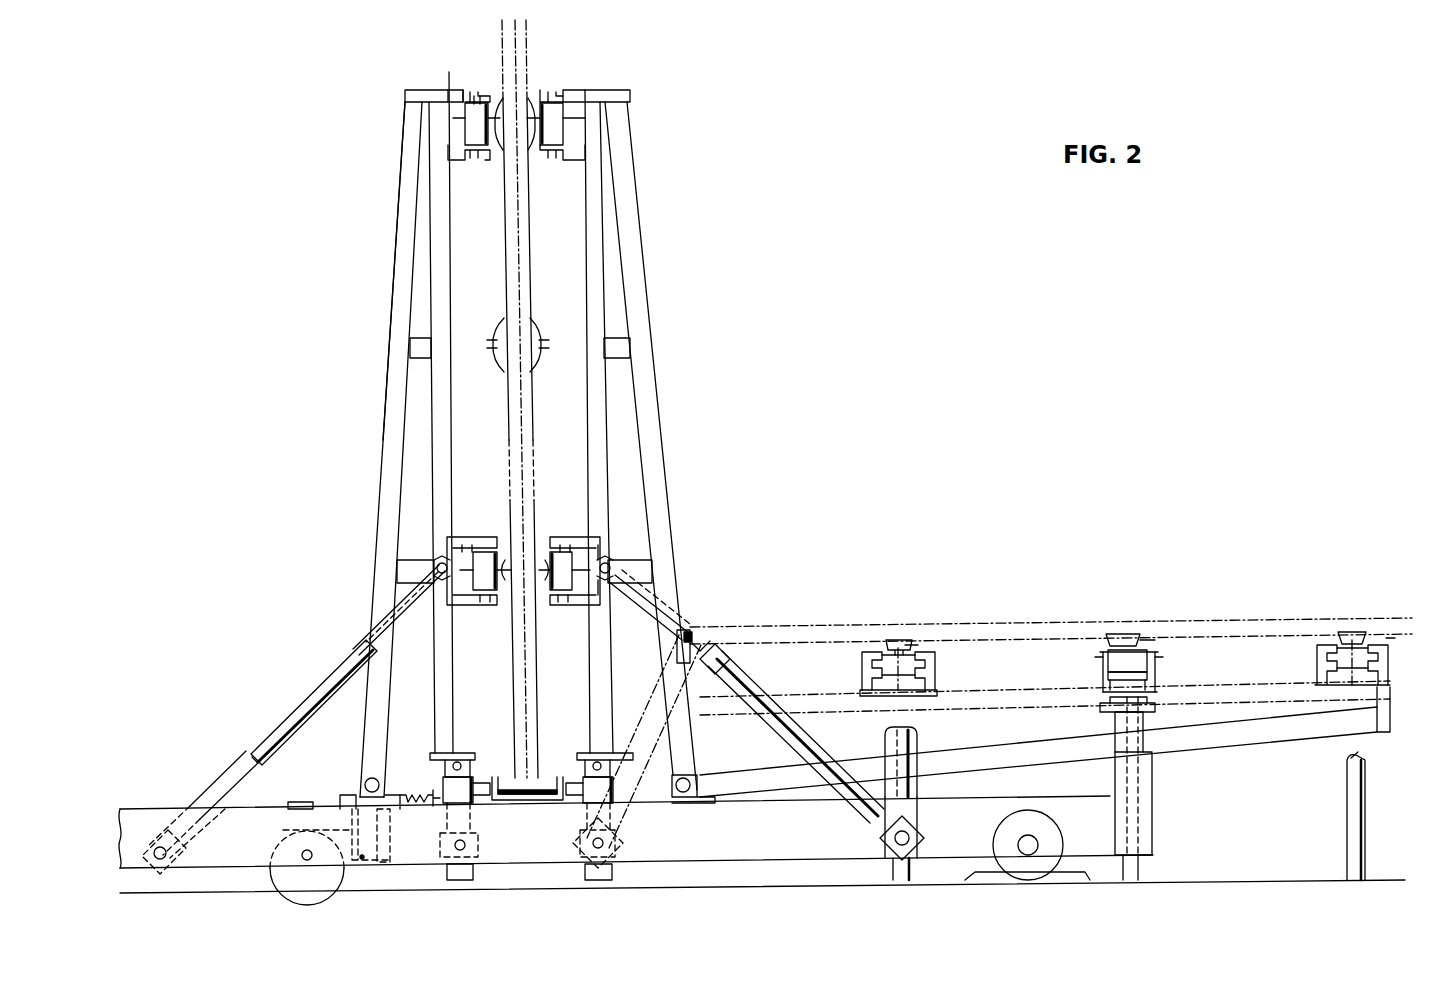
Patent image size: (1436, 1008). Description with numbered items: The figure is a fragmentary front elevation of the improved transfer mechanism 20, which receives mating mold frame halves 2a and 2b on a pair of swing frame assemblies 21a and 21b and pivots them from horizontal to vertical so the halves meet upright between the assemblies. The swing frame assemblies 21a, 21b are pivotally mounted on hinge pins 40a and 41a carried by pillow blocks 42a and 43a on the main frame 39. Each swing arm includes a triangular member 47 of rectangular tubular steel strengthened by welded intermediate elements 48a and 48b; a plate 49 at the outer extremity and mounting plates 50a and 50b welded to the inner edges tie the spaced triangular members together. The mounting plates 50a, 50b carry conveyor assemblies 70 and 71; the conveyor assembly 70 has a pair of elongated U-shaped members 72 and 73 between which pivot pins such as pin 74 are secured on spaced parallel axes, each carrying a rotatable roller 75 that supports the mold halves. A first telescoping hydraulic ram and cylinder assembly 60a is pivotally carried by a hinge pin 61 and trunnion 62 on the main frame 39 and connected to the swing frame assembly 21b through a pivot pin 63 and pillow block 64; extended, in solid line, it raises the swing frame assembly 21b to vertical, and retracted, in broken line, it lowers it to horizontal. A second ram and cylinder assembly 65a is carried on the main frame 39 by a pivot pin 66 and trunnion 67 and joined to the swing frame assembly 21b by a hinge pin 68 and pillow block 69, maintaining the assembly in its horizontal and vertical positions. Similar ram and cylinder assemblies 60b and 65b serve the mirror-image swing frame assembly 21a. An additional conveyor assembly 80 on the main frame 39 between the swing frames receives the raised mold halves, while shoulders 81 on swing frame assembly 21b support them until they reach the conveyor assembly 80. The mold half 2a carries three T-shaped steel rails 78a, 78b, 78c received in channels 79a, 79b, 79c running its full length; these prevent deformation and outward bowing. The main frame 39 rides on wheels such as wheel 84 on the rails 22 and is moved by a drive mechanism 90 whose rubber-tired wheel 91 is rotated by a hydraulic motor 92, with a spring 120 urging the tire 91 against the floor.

The mold frame half 2a is at (531, 404).
The mold frame half 2b is at (508, 416).
The transfer mechanism 20 is at (770, 457).
The swing frame assembly 21a is at (376, 526).
The swing frame assembly 21b is at (662, 426).
The rails 22 is at (975, 874).
The main frame 39 is at (1096, 832).
The hinge pin 40a is at (366, 781).
The hinge pin 41a is at (685, 796).
The pillow block 42a is at (346, 796).
The pillow block 43a is at (708, 804).
The triangular member 47 is at (387, 400).
The intermediate element 48a is at (414, 560).
The intermediate element 48b is at (415, 346).
The plate 49 is at (410, 92).
The mounting plate 50a is at (513, 401).
The mounting plate 50b is at (452, 540).
The telescoping hydraulic ram and cylinder assembly 60a is at (812, 762).
The ram and cylinder assembly 60b is at (290, 708).
The hinge pin 61 is at (912, 836).
The trunnion 62 is at (884, 845).
The pivot pin 63 is at (612, 566).
The pillow block 64 is at (604, 548).
The ram and cylinder assembly 65a is at (584, 815).
The ram and cylinder assembly 65b is at (446, 812).
The pivot pin 66 is at (580, 845).
The trunnion 67 is at (614, 845).
The hinge pin 68 is at (602, 756).
The pillow block 69 is at (580, 755).
The conveyor assembly 70 is at (475, 128).
The conveyor assembly 71 is at (523, 579).
The U-shaped member 72 is at (488, 94).
The U-shaped member 73 is at (486, 157).
The pivot pin 74 is at (477, 98).
The roller 75 is at (470, 130).
The T-shaped member 78a is at (890, 636).
The T-shaped member 78b is at (1112, 632).
The T-shaped member 78c is at (1338, 630).
The channel 79a is at (922, 647).
The channel 79b is at (1150, 642).
The channel 79c is at (1388, 641).
The conveyor assembly 80 is at (509, 807).
The shoulder 81 is at (688, 632).
The wheel 84 is at (1006, 840).
The drive mechanism 90 is at (293, 801).
The rubber-tired wheel 91 is at (272, 841).
The hydraulic motor 92 is at (290, 803).
The spring 120 is at (396, 826).